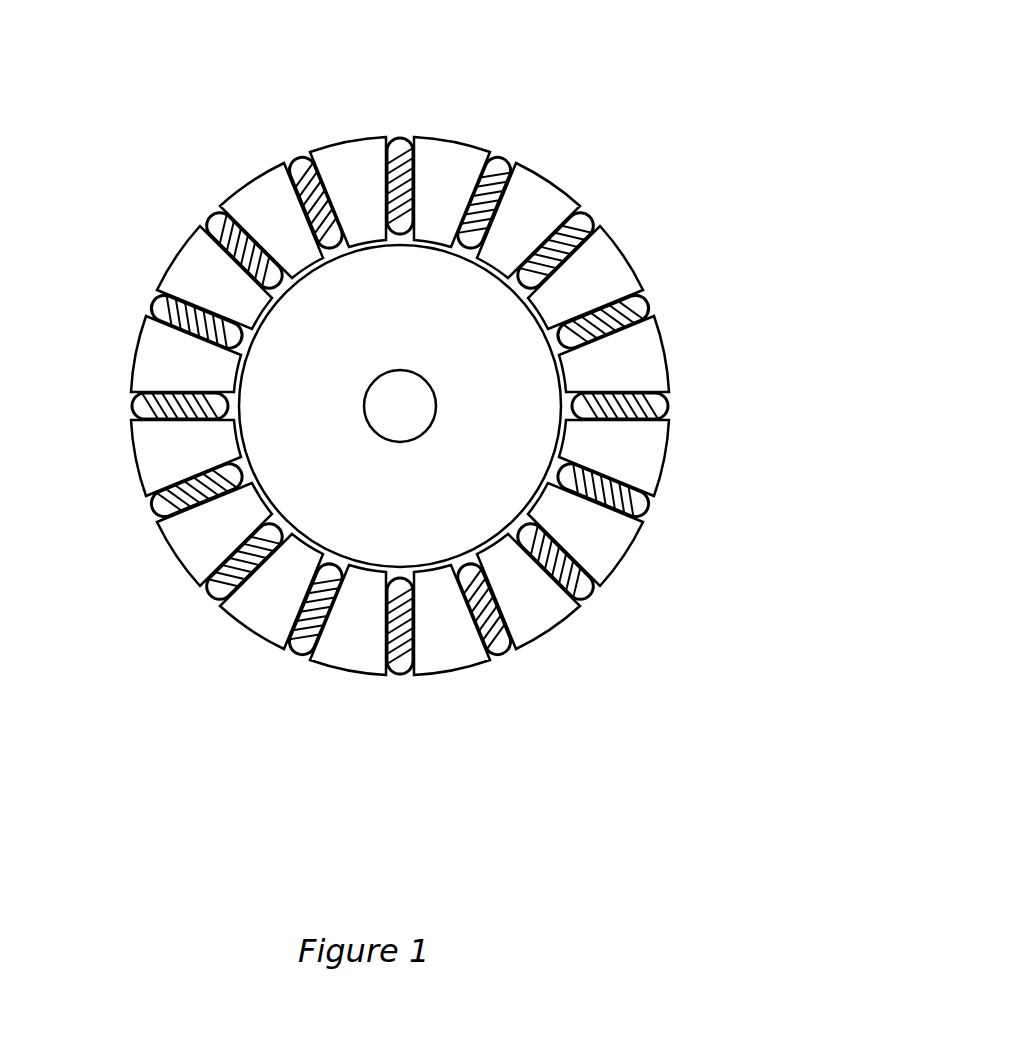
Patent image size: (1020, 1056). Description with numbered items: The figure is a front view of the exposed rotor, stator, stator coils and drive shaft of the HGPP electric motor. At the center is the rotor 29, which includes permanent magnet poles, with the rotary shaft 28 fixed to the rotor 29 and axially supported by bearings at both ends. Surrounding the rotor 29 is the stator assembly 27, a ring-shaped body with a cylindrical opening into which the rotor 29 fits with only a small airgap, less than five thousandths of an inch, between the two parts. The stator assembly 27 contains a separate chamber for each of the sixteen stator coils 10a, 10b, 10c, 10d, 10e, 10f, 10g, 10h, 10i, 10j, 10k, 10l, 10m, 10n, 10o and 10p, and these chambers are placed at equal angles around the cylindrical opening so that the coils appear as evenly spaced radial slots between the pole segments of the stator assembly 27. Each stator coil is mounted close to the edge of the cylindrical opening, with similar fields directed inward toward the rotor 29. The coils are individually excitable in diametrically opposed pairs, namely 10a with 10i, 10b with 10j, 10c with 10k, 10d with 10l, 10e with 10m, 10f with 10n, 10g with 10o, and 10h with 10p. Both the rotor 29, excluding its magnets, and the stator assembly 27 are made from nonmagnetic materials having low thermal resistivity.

The stator assembly 27 is at (530, 212).
The rotary shaft 28 is at (418, 405).
The rotor 29 is at (322, 525).
The stator coil 10a is at (134, 407).
The stator coil 10b is at (160, 305).
The stator coil 10c is at (224, 223).
The stator coil 10d is at (304, 169).
The stator coil 10e is at (405, 147).
The stator coil 10f is at (507, 169).
The stator coil 10g is at (597, 233).
The stator coil 10h is at (651, 311).
The stator coil 10i is at (668, 408).
The stator coil 10j is at (648, 503).
The stator coil 10k is at (598, 589).
The stator coil 10l is at (505, 645).
The stator coil 10m is at (410, 668).
The stator coil 10n is at (298, 645).
The stator coil 10o is at (215, 589).
The stator coil 10p is at (157, 503).